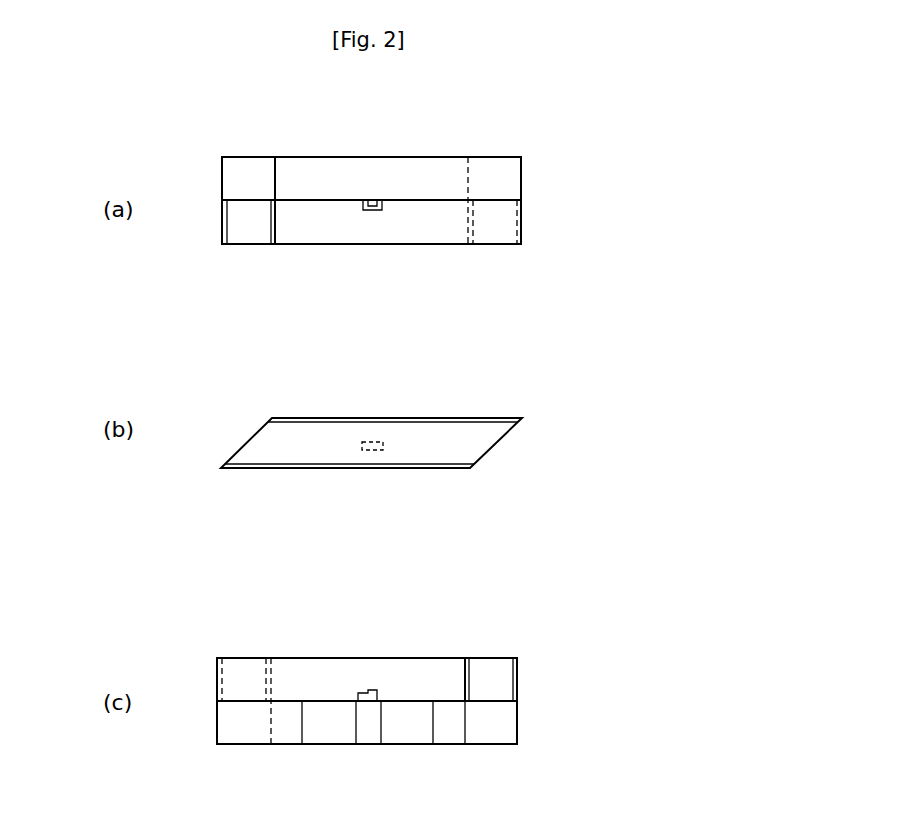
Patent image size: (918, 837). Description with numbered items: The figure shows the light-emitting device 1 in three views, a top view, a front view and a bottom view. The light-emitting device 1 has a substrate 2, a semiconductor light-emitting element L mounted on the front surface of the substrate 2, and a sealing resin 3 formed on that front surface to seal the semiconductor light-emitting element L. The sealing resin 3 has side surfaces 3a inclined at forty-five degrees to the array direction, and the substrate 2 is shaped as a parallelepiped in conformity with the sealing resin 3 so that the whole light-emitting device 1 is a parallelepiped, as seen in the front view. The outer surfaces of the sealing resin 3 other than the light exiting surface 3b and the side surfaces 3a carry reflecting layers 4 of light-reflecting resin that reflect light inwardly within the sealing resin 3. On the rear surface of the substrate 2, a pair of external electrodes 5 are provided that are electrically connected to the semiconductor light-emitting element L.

The light-emitting device 1 is at (538, 150).
The substrate 2 is at (412, 170).
The sealing resin 3 is at (337, 232).
The side surfaces 3a is at (248, 226).
The light exiting surface 3b is at (444, 244).
The reflecting layers 4 is at (222, 218).
The external electrodes 5 is at (325, 735).
The semiconductor light-emitting element L is at (372, 210).